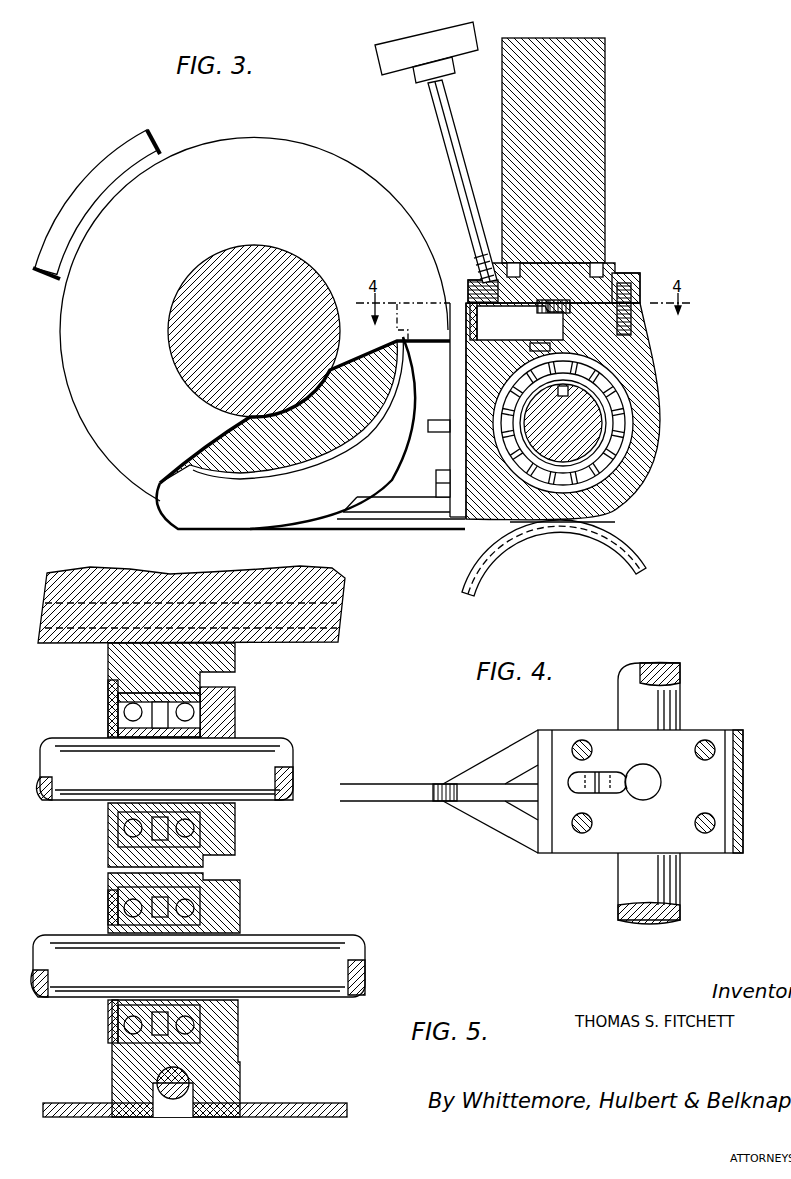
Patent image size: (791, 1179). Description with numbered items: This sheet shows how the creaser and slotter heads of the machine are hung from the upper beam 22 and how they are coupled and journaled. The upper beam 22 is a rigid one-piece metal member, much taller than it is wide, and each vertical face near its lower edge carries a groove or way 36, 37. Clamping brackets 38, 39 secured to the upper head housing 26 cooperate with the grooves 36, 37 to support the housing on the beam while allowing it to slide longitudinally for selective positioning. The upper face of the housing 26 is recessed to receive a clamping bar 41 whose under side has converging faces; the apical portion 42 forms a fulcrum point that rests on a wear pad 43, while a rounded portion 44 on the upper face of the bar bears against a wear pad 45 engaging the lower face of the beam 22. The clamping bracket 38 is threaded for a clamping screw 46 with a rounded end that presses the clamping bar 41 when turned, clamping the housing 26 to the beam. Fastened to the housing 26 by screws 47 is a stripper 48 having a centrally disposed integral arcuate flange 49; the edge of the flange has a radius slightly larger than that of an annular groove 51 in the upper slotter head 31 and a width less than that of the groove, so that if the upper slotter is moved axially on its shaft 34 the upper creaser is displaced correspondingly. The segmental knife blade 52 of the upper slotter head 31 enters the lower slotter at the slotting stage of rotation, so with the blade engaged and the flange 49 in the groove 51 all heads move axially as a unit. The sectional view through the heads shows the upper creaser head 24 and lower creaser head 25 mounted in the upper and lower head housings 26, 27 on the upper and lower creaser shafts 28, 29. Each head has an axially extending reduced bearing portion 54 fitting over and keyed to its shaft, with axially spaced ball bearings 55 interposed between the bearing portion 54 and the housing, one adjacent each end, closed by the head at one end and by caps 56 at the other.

In FIG. 3, the upper beam 22 is at (592, 165).
In FIG. 3, the upper creaser head 24 is at (567, 523).
In FIG. 5, the upper creaser head 24 is at (233, 835).
In FIG. 3, the lower creaser head 25 is at (640, 557).
In FIG. 5, the lower creaser head 25 is at (230, 905).
In FIG. 3, the upper head housing 26 is at (657, 445).
In FIG. 4, the upper head housing 26 is at (690, 738).
In FIG. 5, the upper head housing 26 is at (228, 657).
In FIG. 5, the lower head housing 27 is at (117, 1077).
In FIG. 3, the upper creaser shaft 28 is at (607, 423).
In FIG. 4, the upper creaser shaft 28 is at (670, 694).
In FIG. 5, the upper creaser shaft 28 is at (277, 745).
In FIG. 5, the lower creaser shaft 29 is at (308, 940).
In FIG. 3, the upper slotter head 31 is at (83, 388).
In FIG. 3, the upper slotter shaft 34 is at (183, 350).
In FIG. 3, the groove 36 is at (510, 267).
In FIG. 3, the groove 37 is at (602, 267).
In FIG. 3, the clamping bracket 38 is at (468, 292).
In FIG. 3, the clamping bracket 39 is at (633, 282).
In FIG. 3, the clamping bar 41 is at (497, 320).
In FIG. 4, the clamping bar 41 is at (599, 794).
In FIG. 3, the apical portion 42 is at (565, 335).
In FIG. 3, the wear pad 43 is at (552, 347).
In FIG. 3, the rounded portion 44 is at (623, 328).
In FIG. 3, the wear pad 45 is at (548, 305).
In FIG. 4, the wear pad 45 is at (661, 783).
In FIG. 3, the clamping screw 46 is at (440, 113).
In FIG. 3, the screws 47 is at (433, 482).
In FIG. 3, the stripper 48 is at (370, 512).
In FIG. 3, the flange 49 is at (183, 505).
In FIG. 3, the annular groove 51 is at (173, 477).
In FIG. 3, the segmental knife blade 52 is at (143, 147).
In FIG. 5, the bearing portion 54 is at (110, 732).
In FIG. 5, the ball bearings 55 is at (195, 712).
In FIG. 5, the caps 56 is at (110, 690).